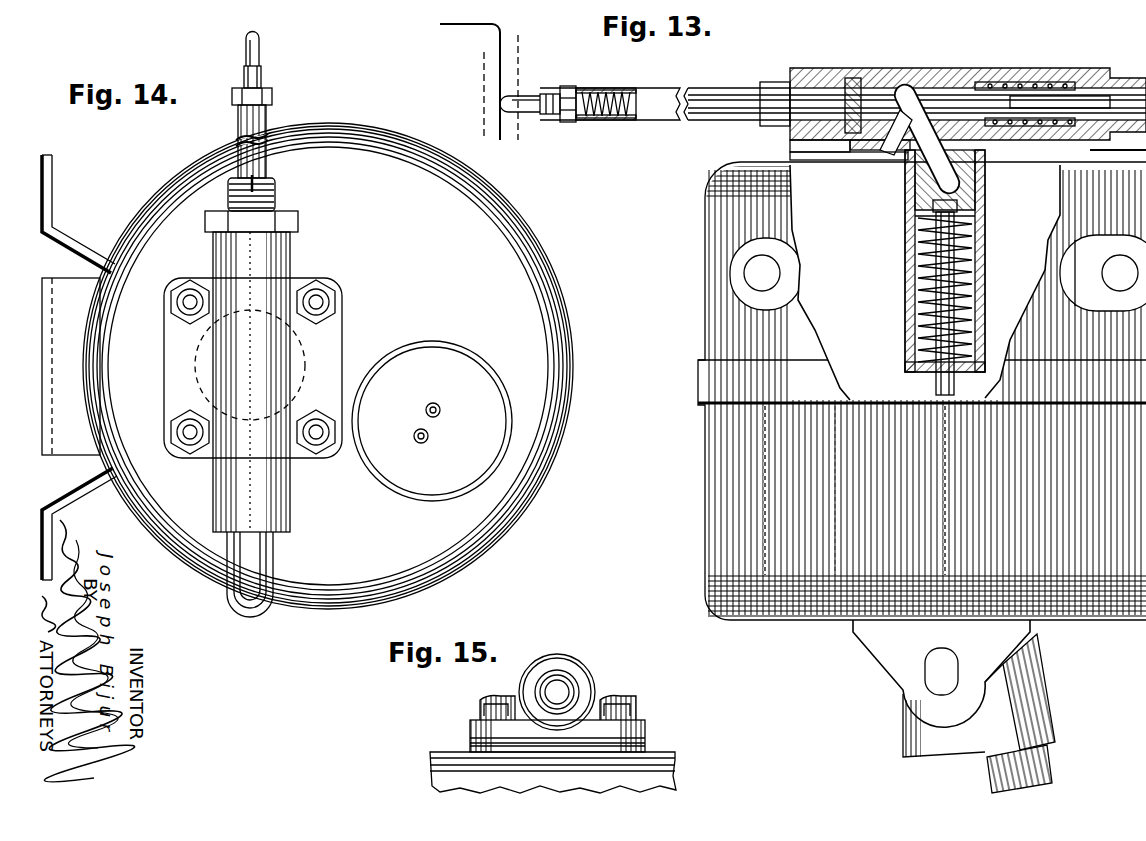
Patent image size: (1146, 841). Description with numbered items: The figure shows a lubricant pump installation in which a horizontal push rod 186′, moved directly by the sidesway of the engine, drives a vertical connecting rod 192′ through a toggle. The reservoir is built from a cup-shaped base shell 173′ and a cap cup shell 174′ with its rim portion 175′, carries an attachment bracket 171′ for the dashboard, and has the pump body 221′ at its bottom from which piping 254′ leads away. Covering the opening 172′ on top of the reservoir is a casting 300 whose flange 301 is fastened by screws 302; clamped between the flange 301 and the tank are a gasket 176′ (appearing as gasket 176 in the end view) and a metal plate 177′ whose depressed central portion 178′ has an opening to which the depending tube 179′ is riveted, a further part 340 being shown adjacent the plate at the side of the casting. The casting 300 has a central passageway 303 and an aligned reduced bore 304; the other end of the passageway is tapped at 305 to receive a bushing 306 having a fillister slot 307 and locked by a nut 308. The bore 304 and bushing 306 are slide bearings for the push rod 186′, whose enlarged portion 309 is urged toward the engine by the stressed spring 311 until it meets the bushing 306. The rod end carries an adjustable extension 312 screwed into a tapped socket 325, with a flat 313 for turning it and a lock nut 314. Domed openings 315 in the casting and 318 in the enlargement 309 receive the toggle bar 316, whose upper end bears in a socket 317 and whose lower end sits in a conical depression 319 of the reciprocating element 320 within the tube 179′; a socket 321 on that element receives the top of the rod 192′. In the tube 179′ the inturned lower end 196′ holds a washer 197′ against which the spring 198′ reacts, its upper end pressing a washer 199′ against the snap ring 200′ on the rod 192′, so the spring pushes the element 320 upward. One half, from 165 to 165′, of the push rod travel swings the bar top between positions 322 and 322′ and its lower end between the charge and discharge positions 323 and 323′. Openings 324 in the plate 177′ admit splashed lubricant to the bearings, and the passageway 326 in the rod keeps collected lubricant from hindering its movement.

In FIG. 13, the position mark 165 is at (497, 43).
In FIG. 13, the position mark 165′ is at (520, 40).
In FIG. 14, the attachment bracket 171′ is at (52, 186).
In FIG. 13, the attachment bracket 171′ is at (735, 280).
In FIG. 13, the opening 172′ is at (890, 162).
In FIG. 13, the cup-shaped base shell 173′ is at (706, 496).
In FIG. 14, the cap cup shell 174′ is at (548, 373).
In FIG. 13, the cap cup shell 174′ is at (706, 316).
In FIG. 14, the reservoir flange 175′ is at (570, 323).
In FIG. 13, the reservoir flange 175′ is at (700, 374).
In FIG. 15, the gasket 176 is at (470, 748).
In FIG. 13, the gasket 176′ is at (872, 166).
In FIG. 15, the metal plate 177′ is at (645, 742).
In FIG. 13, the metal plate 177′ is at (848, 162).
In FIG. 13, the depressed central portion 178′ is at (990, 190).
In FIG. 13, the depending tube 179′ is at (905, 276).
In FIG. 14, the push rod 186′ is at (266, 160).
In FIG. 13, the push rod 186′ is at (652, 114).
In FIG. 13, the vertical connecting rod 192′ is at (955, 388).
In FIG. 13, the inturned lower portion 196′ is at (906, 364).
In FIG. 13, the washer 197′ is at (912, 366).
In FIG. 13, the spring 198′ is at (905, 298).
In FIG. 13, the washer 199′ is at (933, 208).
In FIG. 13, the snap ring 200′ is at (918, 222).
In FIG. 13, the pump body 221′ is at (1046, 672).
In FIG. 13, the piping 254′ is at (1054, 768).
In FIG. 14, the casting 300 is at (290, 492).
In FIG. 15, the casting 300 is at (572, 658).
In FIG. 13, the casting 300 is at (1090, 78).
In FIG. 14, the flange 301 is at (330, 346).
In FIG. 15, the flange 301 is at (645, 728).
In FIG. 14, the screws 302 is at (322, 302).
In FIG. 15, the screws 302 is at (636, 700).
In FIG. 13, the central passageway 303 is at (1010, 84).
In FIG. 14, the bore 304 is at (274, 557).
In FIG. 15, the bore 304 is at (572, 688).
In FIG. 13, the tapped end 305 is at (838, 70).
In FIG. 14, the bushing 306 is at (277, 199).
In FIG. 13, the bushing 306 is at (775, 80).
In FIG. 14, the fillister slot 307 is at (255, 180).
In FIG. 13, the fillister slot 307 is at (762, 86).
In FIG. 14, the nut 308 is at (299, 222).
In FIG. 13, the nut 308 is at (796, 70).
In FIG. 13, the enlarged portion 309 is at (856, 90).
In FIG. 13, the stressed spring 311 is at (1050, 96).
In FIG. 14, the adjustable extension 312 is at (262, 71).
In FIG. 13, the adjustable extension 312 is at (547, 116).
In FIG. 14, the flat 313 is at (260, 48).
In FIG. 13, the flat 313 is at (525, 102).
In FIG. 14, the lock nut 314 is at (273, 96).
In FIG. 13, the lock nut 314 is at (568, 122).
In FIG. 13, the domed opening 315 is at (1044, 190).
In FIG. 13, the toggle bar 316 is at (935, 140).
In FIG. 13, the socket 317 is at (920, 78).
In FIG. 13, the domed opening 318 is at (872, 70).
In FIG. 13, the conical depression 319 is at (916, 200).
In FIG. 13, the reciprocating element 320 is at (985, 232).
In FIG. 13, the socket 321 is at (985, 248).
In FIG. 13, the position 322 is at (915, 88).
In FIG. 13, the position 322′ is at (935, 90).
In FIG. 13, the completed charge position 323 is at (985, 200).
In FIG. 13, the completed discharge position 323′ is at (985, 215).
In FIG. 13, the openings 324 is at (992, 170).
In FIG. 13, the tapped socket 325 is at (608, 98).
In FIG. 13, the passageway 326 is at (1100, 152).
In FIG. 13, the gasket 340 is at (792, 146).